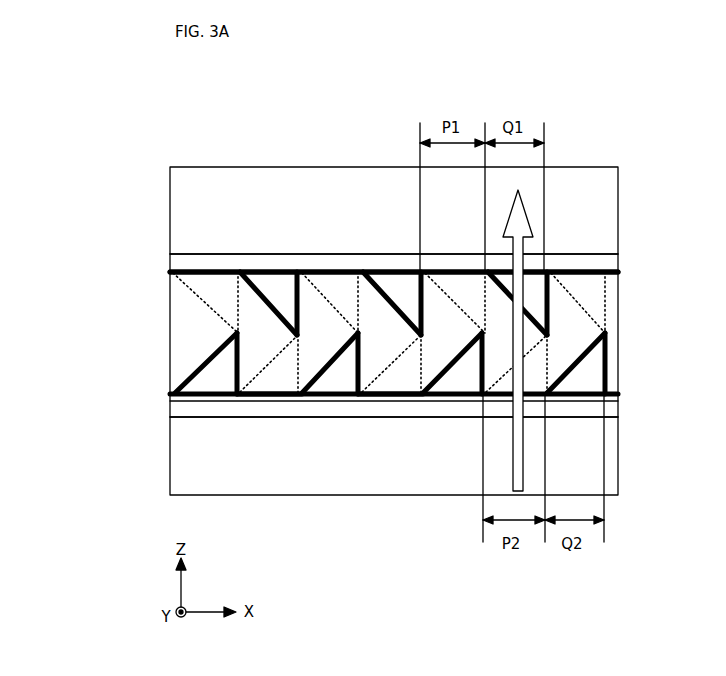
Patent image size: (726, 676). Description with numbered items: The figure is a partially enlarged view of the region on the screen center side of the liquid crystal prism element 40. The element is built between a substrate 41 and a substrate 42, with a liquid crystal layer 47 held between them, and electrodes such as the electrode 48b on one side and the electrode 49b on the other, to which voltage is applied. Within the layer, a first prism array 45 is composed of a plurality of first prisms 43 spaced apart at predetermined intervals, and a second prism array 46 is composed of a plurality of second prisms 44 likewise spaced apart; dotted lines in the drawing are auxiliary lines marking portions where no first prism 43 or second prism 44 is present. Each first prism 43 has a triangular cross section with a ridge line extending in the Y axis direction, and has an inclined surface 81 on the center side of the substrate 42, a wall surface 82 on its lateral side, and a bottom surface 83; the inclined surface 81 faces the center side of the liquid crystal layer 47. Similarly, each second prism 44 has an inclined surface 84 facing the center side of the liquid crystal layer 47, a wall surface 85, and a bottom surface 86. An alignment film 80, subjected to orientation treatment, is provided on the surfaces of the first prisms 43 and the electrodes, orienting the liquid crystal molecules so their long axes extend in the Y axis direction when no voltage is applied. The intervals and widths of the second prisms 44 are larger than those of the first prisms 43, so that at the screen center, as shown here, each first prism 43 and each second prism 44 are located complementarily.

The liquid crystal prism element 40 is at (655, 158).
The substrate 41 is at (619, 207).
The substrate 42 is at (619, 452).
The first prism 43 is at (409, 262).
The first prism array 45 is at (393, 262).
The second prism 44 is at (443, 438).
The second prism array 46 is at (394, 438).
The liquid crystal layer 47 is at (570, 326).
The electrode 48b is at (619, 264).
The electrode 49b is at (619, 407).
The alignment film 80 is at (207, 361).
The inclined surface 81 is at (290, 394).
The wall surface 82 is at (390, 394).
The bottom surface 83 is at (323, 395).
The inclined surface 84 is at (243, 294).
The wall surface 85 is at (338, 290).
The bottom surface 86 is at (276, 272).